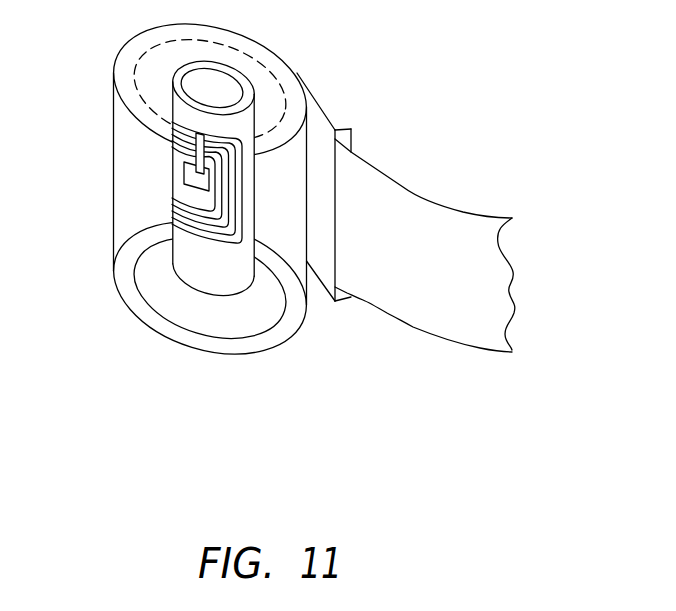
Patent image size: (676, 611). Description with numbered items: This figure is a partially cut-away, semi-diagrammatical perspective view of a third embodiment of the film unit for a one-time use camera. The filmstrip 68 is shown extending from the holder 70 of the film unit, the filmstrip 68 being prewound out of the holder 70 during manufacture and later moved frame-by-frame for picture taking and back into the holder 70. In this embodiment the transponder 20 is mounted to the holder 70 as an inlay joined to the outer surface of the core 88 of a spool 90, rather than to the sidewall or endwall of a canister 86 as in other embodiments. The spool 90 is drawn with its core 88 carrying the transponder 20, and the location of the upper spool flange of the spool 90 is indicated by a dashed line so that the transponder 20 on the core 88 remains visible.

The transponder 20 is at (184, 195).
The filmstrip 68 is at (405, 185).
The holder 70 is at (287, 53).
The canister 86 is at (112, 114).
The core 88 is at (207, 286).
The spool 90 is at (278, 337).